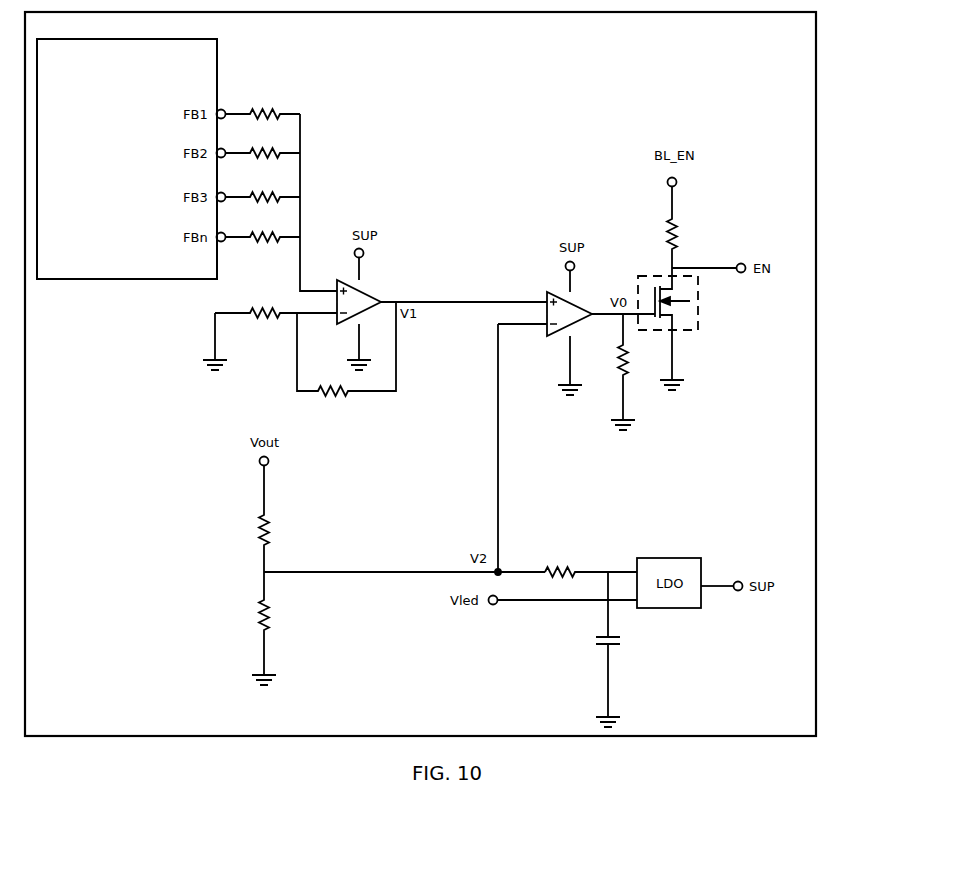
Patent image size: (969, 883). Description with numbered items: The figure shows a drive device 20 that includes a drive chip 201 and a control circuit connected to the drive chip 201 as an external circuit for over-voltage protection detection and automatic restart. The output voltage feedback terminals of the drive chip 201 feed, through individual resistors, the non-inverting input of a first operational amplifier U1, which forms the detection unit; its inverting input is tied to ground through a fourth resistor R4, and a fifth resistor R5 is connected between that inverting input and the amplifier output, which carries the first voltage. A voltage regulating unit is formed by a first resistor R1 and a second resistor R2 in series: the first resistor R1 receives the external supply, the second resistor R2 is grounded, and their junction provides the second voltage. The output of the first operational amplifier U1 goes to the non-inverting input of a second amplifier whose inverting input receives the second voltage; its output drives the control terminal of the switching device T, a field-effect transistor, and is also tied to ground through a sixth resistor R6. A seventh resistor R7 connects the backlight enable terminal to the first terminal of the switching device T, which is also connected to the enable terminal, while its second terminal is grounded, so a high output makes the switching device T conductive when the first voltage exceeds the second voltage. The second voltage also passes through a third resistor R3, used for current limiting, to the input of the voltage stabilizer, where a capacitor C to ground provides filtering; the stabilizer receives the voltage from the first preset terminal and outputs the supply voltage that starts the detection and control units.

The drive device 20 is at (816, 57).
The drive chip 201 is at (217, 63).
The first operational amplifier U1 is at (361, 300).
The first resistor R1 is at (252, 519).
The second resistor R2 is at (252, 623).
The third resistor R3 is at (591, 560).
The fourth resistor R4 is at (276, 334).
The fifth resistor R5 is at (346, 359).
The sixth resistor R6 is at (612, 367).
The seventh resistor R7 is at (661, 228).
The switching device T is at (681, 324).
The capacitor C is at (616, 644).